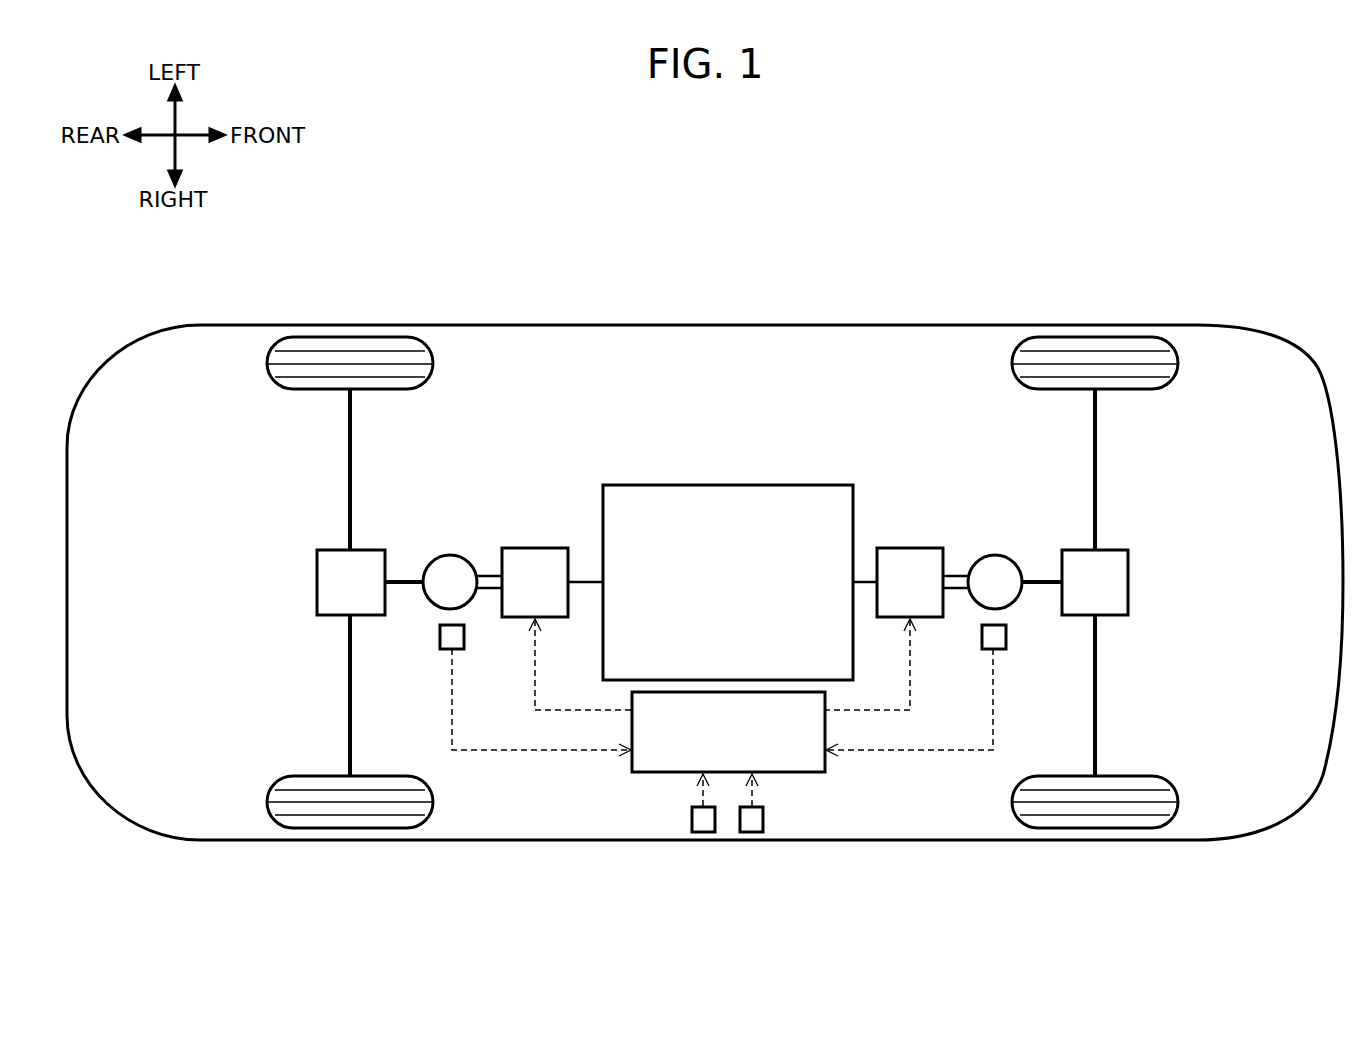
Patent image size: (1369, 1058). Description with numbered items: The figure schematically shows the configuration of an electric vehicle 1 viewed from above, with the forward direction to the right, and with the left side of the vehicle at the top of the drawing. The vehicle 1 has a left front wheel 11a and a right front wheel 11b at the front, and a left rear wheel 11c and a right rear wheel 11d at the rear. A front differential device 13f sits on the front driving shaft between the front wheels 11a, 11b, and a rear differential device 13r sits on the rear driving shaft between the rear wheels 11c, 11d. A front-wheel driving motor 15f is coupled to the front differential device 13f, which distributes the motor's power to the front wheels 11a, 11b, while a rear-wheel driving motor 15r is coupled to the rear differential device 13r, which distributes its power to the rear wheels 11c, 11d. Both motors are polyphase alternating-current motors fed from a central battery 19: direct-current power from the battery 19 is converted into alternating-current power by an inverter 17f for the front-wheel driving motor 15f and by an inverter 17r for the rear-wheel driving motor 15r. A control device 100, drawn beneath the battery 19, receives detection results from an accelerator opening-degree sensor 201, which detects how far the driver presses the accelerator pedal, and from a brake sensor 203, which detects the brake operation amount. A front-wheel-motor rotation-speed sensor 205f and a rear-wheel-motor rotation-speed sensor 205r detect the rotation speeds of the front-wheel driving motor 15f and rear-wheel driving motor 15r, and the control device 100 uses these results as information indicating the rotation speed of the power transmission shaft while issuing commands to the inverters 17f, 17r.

The vehicle 1 is at (1114, 121).
The front wheel 11a is at (1118, 337).
The front wheel 11b is at (1120, 828).
The rear wheel 11c is at (320, 337).
The rear wheel 11d is at (320, 828).
The rear differential device 13r is at (375, 548).
The rear-wheel driving motor 15r is at (450, 556).
The inverter 17r is at (538, 553).
The battery 19 is at (697, 543).
The inverter 17f is at (905, 555).
The front-wheel driving motor 15f is at (990, 556).
The front differential device 13f is at (1077, 555).
The rear-wheel-motor rotation-speed sensor 205r is at (456, 649).
The front-wheel-motor rotation-speed sensor 205f is at (991, 649).
The control device 100 is at (793, 752).
The accelerator opening-degree sensor 201 is at (703, 832).
The brake sensor 203 is at (752, 832).